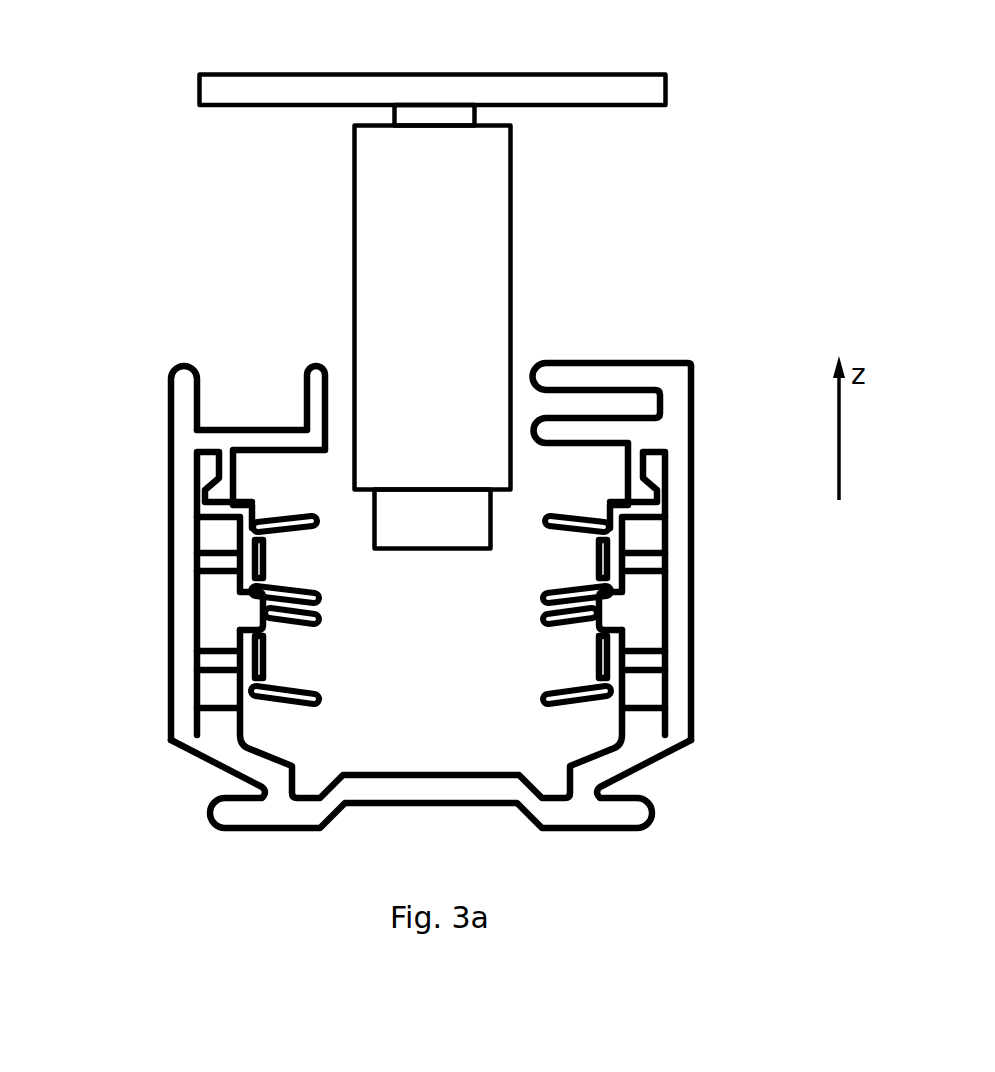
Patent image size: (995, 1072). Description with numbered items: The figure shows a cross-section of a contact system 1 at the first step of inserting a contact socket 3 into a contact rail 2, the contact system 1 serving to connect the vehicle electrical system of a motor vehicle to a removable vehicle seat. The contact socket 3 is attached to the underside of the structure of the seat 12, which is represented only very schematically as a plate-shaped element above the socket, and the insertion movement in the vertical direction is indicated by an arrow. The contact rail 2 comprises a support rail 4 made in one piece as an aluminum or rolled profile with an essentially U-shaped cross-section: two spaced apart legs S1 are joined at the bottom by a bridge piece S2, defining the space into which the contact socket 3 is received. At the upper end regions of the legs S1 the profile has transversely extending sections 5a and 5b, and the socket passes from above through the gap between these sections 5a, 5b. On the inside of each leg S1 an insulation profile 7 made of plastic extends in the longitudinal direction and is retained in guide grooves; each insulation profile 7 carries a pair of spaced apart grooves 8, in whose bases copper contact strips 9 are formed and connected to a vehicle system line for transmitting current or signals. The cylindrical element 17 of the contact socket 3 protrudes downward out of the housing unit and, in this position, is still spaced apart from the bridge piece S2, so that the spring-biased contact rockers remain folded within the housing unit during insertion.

The contact system 1 is at (766, 114).
The contact rail 2 is at (185, 473).
The contact socket 3 is at (515, 380).
The support rail 4 is at (183, 637).
The transversely extending section 5a is at (650, 372).
The transversely extending section 5b is at (260, 423).
The insulation profile 7 is at (247, 520).
The groove 8 is at (320, 629).
The contact strip 9 is at (268, 560).
The structure of the seat 12 is at (588, 88).
The cylindrical element 17 is at (436, 527).
The leg S1 is at (180, 688).
The bridge piece S2 is at (440, 808).